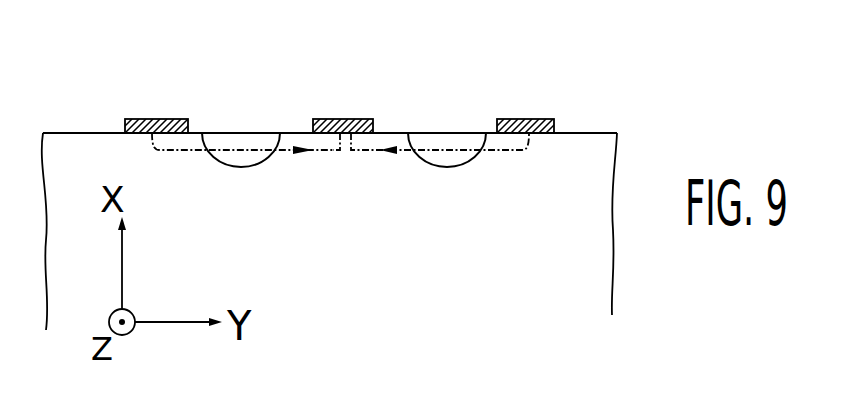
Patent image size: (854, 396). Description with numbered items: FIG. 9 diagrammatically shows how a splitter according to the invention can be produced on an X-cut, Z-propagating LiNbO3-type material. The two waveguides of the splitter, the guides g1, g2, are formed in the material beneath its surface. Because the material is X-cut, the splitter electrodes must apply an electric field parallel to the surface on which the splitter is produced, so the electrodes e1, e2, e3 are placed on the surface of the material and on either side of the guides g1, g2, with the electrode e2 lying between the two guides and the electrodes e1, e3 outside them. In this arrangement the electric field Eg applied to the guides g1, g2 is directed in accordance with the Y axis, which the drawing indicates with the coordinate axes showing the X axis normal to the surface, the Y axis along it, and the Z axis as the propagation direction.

The electrode e1 is at (140, 119).
The electrode e2 is at (327, 119).
The electrode e3 is at (518, 119).
The guide g1 is at (225, 163).
The guide g2 is at (428, 167).
The electric field Eg is at (353, 152).